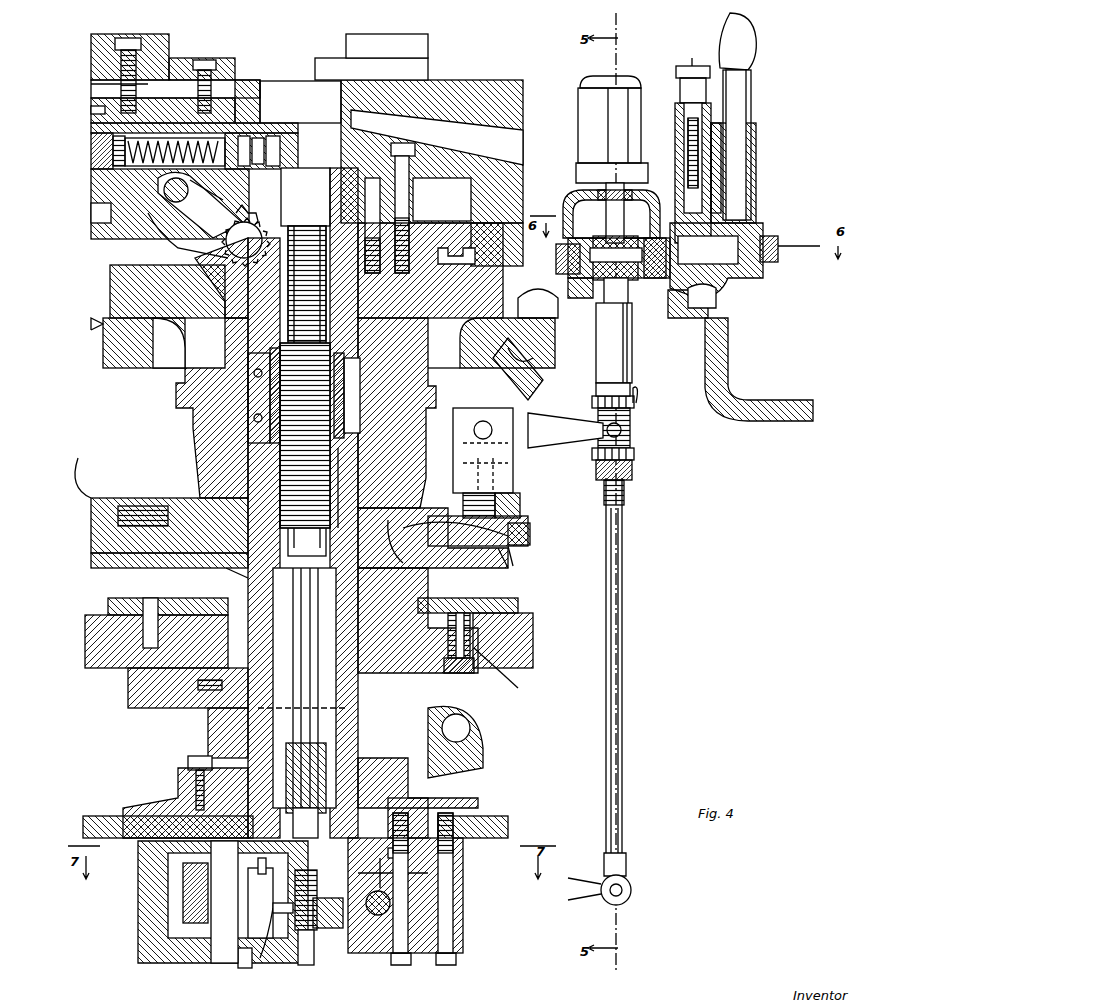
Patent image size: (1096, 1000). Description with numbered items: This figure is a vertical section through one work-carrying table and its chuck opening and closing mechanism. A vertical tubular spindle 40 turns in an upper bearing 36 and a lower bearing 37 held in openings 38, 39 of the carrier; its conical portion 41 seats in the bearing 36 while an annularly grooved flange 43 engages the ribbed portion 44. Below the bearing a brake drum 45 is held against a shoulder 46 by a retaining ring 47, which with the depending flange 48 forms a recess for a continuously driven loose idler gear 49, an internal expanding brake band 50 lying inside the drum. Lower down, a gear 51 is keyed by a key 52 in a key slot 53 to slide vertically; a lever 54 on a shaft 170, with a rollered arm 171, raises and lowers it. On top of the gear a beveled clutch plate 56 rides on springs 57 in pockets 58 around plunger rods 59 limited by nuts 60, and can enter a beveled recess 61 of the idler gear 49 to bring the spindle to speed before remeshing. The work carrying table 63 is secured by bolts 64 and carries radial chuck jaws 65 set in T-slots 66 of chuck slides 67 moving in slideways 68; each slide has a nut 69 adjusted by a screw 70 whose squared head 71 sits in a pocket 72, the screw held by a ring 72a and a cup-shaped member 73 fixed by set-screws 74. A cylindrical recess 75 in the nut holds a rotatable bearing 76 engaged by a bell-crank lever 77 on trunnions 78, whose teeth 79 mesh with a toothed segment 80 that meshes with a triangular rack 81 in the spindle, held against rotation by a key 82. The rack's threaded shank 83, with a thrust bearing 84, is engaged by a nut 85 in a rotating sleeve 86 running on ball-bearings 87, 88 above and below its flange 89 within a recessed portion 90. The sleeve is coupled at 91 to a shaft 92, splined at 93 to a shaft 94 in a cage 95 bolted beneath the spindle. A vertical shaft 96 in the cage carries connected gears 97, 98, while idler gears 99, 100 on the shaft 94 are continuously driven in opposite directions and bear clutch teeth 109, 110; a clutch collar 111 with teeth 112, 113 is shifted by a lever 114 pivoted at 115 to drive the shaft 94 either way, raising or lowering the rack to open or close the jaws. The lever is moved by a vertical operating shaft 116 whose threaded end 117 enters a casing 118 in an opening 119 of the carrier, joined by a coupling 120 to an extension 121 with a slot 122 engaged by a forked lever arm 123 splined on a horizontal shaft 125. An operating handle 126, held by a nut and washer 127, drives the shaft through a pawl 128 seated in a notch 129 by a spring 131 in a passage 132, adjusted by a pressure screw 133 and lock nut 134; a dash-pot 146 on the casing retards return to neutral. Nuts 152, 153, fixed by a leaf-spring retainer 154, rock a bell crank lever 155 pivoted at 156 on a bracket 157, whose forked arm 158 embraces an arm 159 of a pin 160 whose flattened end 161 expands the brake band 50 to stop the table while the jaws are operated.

The upper bearing 36 is at (150, 355).
The lower bearing 37 is at (180, 758).
The opening 38 is at (120, 355).
The opening 39 is at (420, 800).
The vertical tubular spindle 40 is at (370, 470).
The central conical portion 41 is at (445, 320).
The annularly grooved flange 43 is at (500, 240).
The ribbed portion 44 is at (500, 278).
The brake drum 45 is at (79, 472).
The shoulder 46 is at (398, 548).
The retaining ring 47 is at (410, 523).
The downwardly depending flange 48 is at (522, 525).
The loose idler gear 49 is at (499, 566).
The internal expanding brake band 50 is at (100, 490).
The gear 51 is at (510, 622).
The key 52 is at (192, 676).
The key slot 53 is at (215, 560).
The lever 54 is at (435, 690).
The beveled edge clutch plate 56 is at (440, 578).
The springs 57 is at (462, 630).
The pockets 58 is at (456, 640).
The plunger rods 59 is at (504, 674).
The nuts 60 is at (455, 665).
The beveled walled recess 61 is at (519, 563).
The work carrying table 63 is at (446, 109).
The bolts 64 is at (402, 188).
The radial chuck jaws 65 is at (160, 40).
The T-slots 66 is at (240, 80).
The chuck slides 67 is at (226, 40).
The slideways 68 is at (242, 133).
The nut 69 is at (272, 150).
The screw 70 is at (256, 140).
The squared head 71 is at (95, 144).
The pocket 72 is at (90, 130).
The ring 72a is at (90, 205).
The retaining cup-shaped member 73 is at (86, 102).
The set-screws 74 is at (92, 80).
The cylindrical recess 75 is at (180, 182).
The recessed rotatable bearing 76 is at (212, 188).
The bell-crank lever 77 is at (200, 205).
The trunnions 78 is at (165, 220).
The teeth 79 is at (246, 210).
The combination toothed segment 80 is at (248, 240).
The vertically reciprocating rack 81 is at (286, 315).
The key 82 is at (322, 188).
The threaded shank 83 is at (272, 440).
The thrust bearing 84 is at (262, 445).
The nut 85 is at (352, 390).
The rotating sleeve 86 is at (332, 445).
The anti-friction ball-bearing 87 is at (350, 365).
The anti-friction ball-bearing 88 is at (336, 410).
The flange 89 is at (350, 408).
The recessed portion 90 is at (240, 410).
The coupling 91 is at (240, 572).
The shaft 92 is at (304, 688).
The spline 93 is at (170, 780).
The shaft 94 is at (306, 799).
The bracket or cage 95 is at (172, 845).
The vertical shaft 96 is at (210, 902).
The upper gear 97 is at (260, 903).
The lower gear 98 is at (245, 940).
The idler gear 99 is at (395, 852).
The idler gear 100 is at (330, 920).
The clutch tooth 109 is at (420, 865).
The clutch tooth 110 is at (272, 912).
The flanged clutch collar 111 is at (262, 925).
The clutch tooth 112 is at (306, 894).
The clutch tooth 113 is at (302, 950).
The lever 114 is at (490, 905).
The pivot 115 is at (375, 905).
The vertical operating shaft 116 is at (610, 715).
The threaded end 117 is at (616, 480).
The casing 118 is at (555, 205).
The opening 119 is at (720, 345).
The cotter-pinned coupling 120 is at (610, 330).
The vertical extension 121 is at (622, 200).
The slot 122 is at (590, 280).
The forked lever arm 123 is at (585, 235).
The horizontal shaft 125 is at (620, 280).
The operating handle 126 is at (740, 55).
The nut and washer 127 is at (770, 245).
The pawl 128 is at (750, 215).
The notch 129 is at (730, 232).
The spring 131 is at (700, 178).
The passage 132 is at (694, 160).
The pressure screw 133 is at (694, 105).
The lock nut 134 is at (672, 75).
The dash-pot 146 is at (570, 125).
The nut 152 is at (626, 394).
The nut 153 is at (626, 448).
The leaf-spring retainer 154 is at (626, 425).
The bell crank lever 155 is at (540, 410).
The pivot 156 is at (483, 425).
The bracket 157 is at (518, 369).
The forked arm 158 is at (500, 455).
The laterally extending arm 159 is at (488, 470).
The vertically disposed pin 160 is at (487, 492).
The flattened end portion 161 is at (512, 500).
The shaft 170 is at (476, 725).
The rollered arm 171 is at (470, 770).